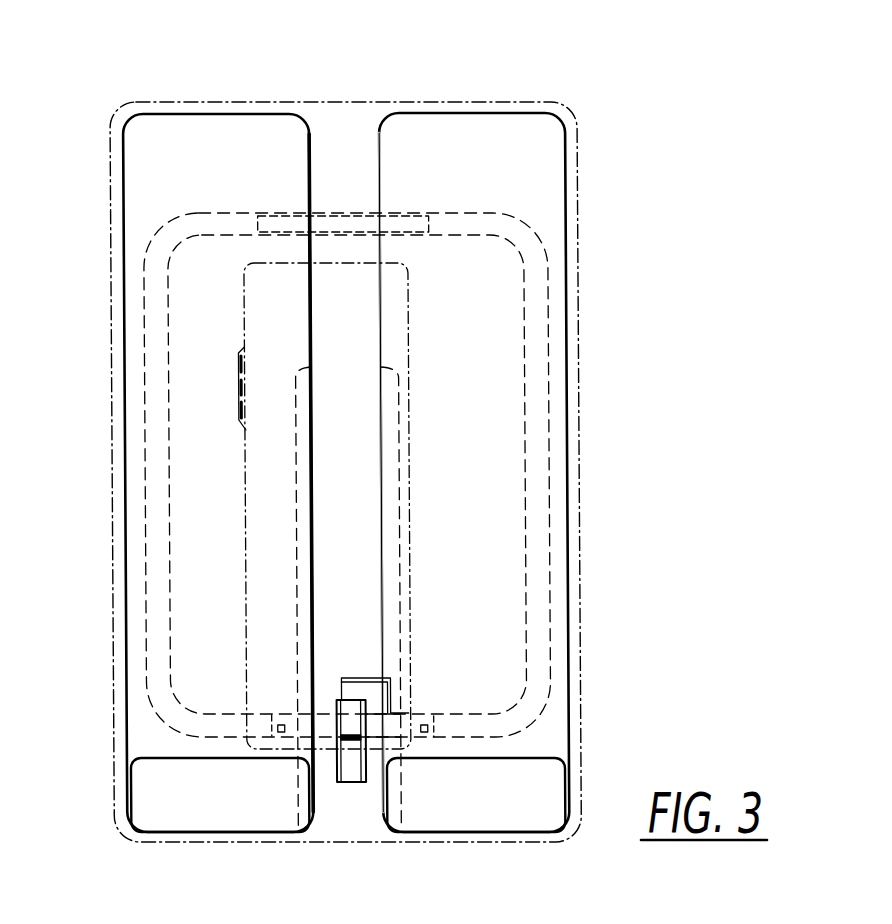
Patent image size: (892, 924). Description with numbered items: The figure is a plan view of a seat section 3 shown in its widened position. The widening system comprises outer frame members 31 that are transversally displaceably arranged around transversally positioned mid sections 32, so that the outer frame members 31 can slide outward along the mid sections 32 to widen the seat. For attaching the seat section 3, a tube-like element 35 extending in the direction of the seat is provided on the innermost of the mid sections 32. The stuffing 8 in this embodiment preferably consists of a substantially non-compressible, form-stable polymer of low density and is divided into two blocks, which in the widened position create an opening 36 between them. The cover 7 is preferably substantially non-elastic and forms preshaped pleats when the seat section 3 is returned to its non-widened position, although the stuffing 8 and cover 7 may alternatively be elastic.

The seat section 3 is at (104, 273).
The cover 7 is at (582, 286).
The stuffing 8 is at (543, 159).
The outer frame members 31 is at (459, 217).
The mid sections 32 is at (349, 215).
The tube-like element 35 is at (348, 762).
The opening 36 is at (358, 492).